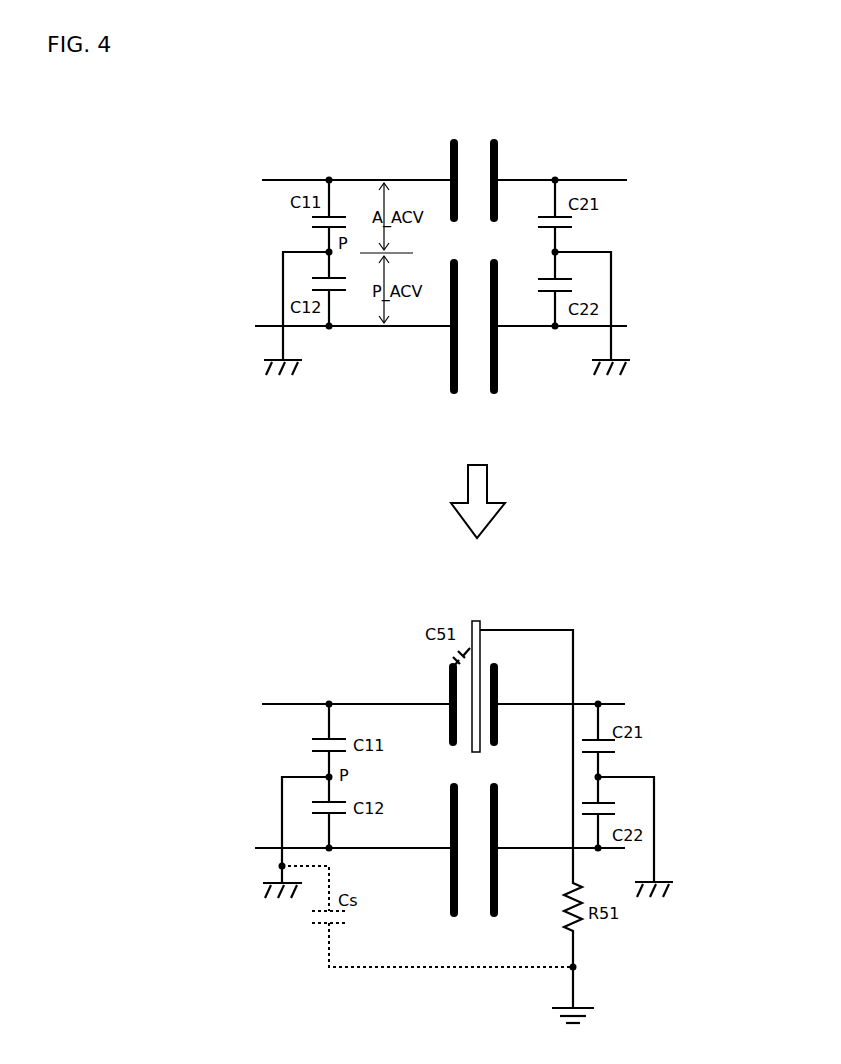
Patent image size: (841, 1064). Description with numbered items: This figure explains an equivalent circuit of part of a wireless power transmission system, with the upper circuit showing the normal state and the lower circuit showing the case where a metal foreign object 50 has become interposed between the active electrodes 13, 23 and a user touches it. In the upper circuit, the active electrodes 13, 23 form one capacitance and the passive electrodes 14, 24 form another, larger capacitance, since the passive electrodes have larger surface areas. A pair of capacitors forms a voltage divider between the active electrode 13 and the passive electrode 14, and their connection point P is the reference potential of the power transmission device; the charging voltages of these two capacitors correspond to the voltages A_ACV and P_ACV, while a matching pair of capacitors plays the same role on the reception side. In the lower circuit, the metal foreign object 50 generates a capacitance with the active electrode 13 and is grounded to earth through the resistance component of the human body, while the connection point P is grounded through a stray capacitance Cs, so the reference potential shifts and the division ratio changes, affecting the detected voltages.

The active electrode 13 is at (450, 160).
The active electrode 23 is at (498, 160).
The passive electrode 14 is at (450, 363).
The passive electrode 24 is at (498, 363).
The metal foreign object 50 is at (474, 622).